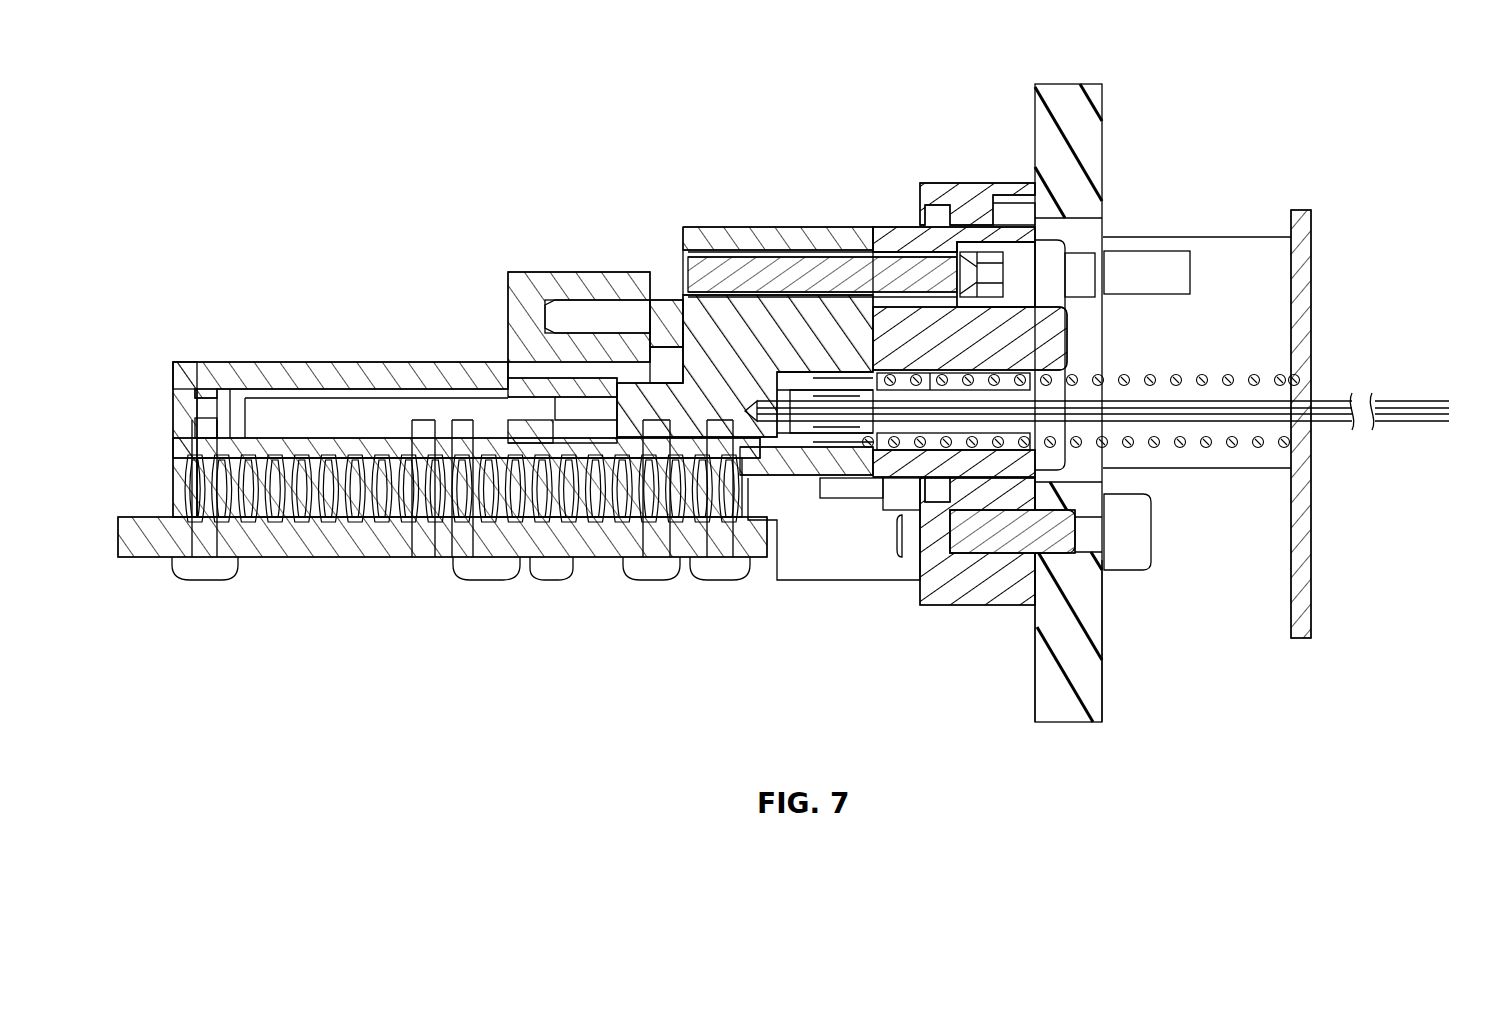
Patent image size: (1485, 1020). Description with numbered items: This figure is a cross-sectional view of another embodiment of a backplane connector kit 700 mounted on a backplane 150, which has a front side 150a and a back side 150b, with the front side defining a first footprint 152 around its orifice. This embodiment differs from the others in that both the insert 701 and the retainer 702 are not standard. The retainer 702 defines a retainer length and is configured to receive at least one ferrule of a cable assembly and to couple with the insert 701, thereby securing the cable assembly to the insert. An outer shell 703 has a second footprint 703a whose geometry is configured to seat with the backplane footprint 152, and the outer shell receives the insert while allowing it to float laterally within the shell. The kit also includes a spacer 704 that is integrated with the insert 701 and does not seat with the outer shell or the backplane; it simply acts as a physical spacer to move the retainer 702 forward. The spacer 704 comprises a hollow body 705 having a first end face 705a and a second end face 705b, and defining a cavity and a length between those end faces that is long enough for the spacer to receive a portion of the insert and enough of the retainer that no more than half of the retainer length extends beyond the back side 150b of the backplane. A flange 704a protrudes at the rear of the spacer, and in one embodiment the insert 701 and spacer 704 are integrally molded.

The backplane connector kit 700 is at (783, 427).
The insert 701 is at (710, 240).
The retainer 702 is at (1050, 335).
The outer shell 703 is at (957, 195).
The second footprint 703a is at (1068, 533).
The spacer 704 is at (931, 315).
The flange 704a is at (1012, 485).
The hollow body 705 is at (890, 226).
The first end face 705a is at (1040, 487).
The second end face 705b is at (872, 450).
The backplane 150 is at (1070, 722).
The front side 150a is at (1035, 688).
The back side 150b is at (1103, 665).
The first footprint 152 is at (1035, 558).